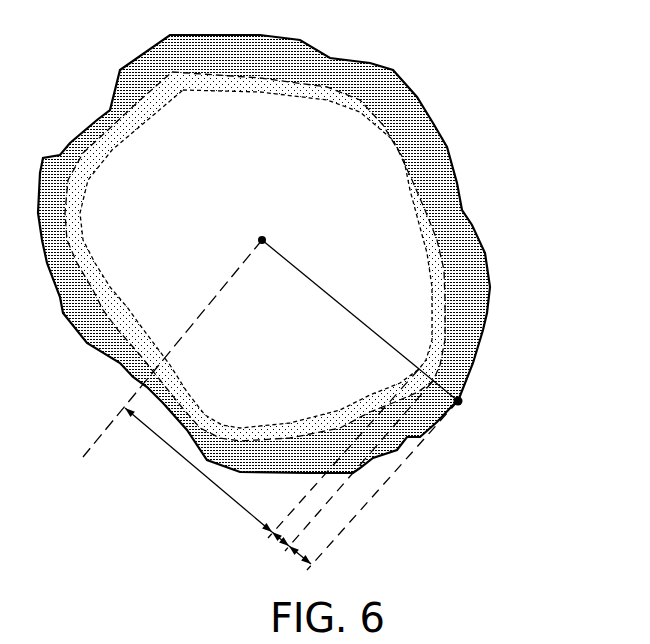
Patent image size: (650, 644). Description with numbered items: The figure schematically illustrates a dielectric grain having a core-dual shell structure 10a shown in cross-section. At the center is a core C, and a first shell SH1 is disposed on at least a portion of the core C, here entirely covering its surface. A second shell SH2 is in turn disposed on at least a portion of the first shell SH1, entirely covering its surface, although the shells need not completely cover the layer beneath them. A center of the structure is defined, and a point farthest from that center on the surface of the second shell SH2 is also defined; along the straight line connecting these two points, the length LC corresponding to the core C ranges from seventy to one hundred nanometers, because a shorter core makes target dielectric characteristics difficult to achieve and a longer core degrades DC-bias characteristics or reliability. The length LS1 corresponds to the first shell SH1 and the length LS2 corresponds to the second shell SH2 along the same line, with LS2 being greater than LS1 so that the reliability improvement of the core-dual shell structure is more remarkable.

The shell structure of display module 10a is at (330, 254).
The second shell SH2 is at (452, 225).
The first shell SH1 is at (410, 193).
The core C is at (373, 162).
The length corresponding to the core LC is at (202, 475).
The length corresponding to the first shell LS1 is at (278, 542).
The length corresponding to the second shell LS2 is at (300, 558).